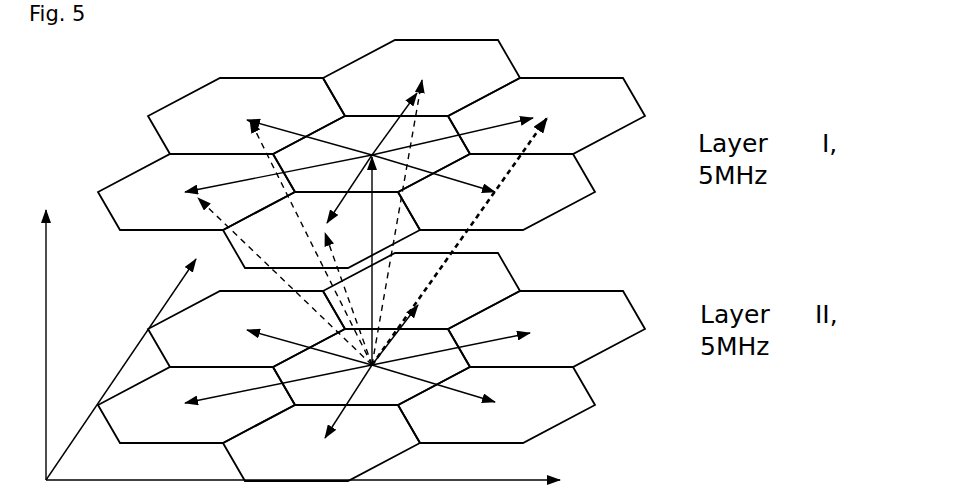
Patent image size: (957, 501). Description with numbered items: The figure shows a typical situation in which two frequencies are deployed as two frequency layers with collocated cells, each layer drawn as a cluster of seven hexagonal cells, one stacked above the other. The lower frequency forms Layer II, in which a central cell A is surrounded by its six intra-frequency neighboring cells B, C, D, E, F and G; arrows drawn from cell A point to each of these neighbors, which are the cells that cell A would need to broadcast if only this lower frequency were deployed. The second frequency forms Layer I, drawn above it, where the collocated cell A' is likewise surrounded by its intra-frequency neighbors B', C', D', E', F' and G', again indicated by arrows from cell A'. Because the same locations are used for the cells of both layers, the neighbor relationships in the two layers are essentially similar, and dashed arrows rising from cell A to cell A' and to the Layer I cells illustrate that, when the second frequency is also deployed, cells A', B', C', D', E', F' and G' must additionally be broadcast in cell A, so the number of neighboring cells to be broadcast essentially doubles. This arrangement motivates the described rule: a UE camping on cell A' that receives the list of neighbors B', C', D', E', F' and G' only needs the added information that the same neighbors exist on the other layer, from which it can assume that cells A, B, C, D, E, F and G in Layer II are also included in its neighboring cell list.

The cell A is at (371, 367).
The cell B is at (321, 443).
The cell C is at (496, 405).
The cell D is at (546, 329).
The cell E is at (421, 291).
The cell F is at (246, 329).
The cell G is at (196, 405).
The cell A' is at (371, 154).
The cell B' is at (321, 230).
The cell C' is at (496, 192).
The cell D' is at (546, 116).
The cell E' is at (421, 78).
The cell F' is at (246, 116).
The cell G' is at (196, 192).